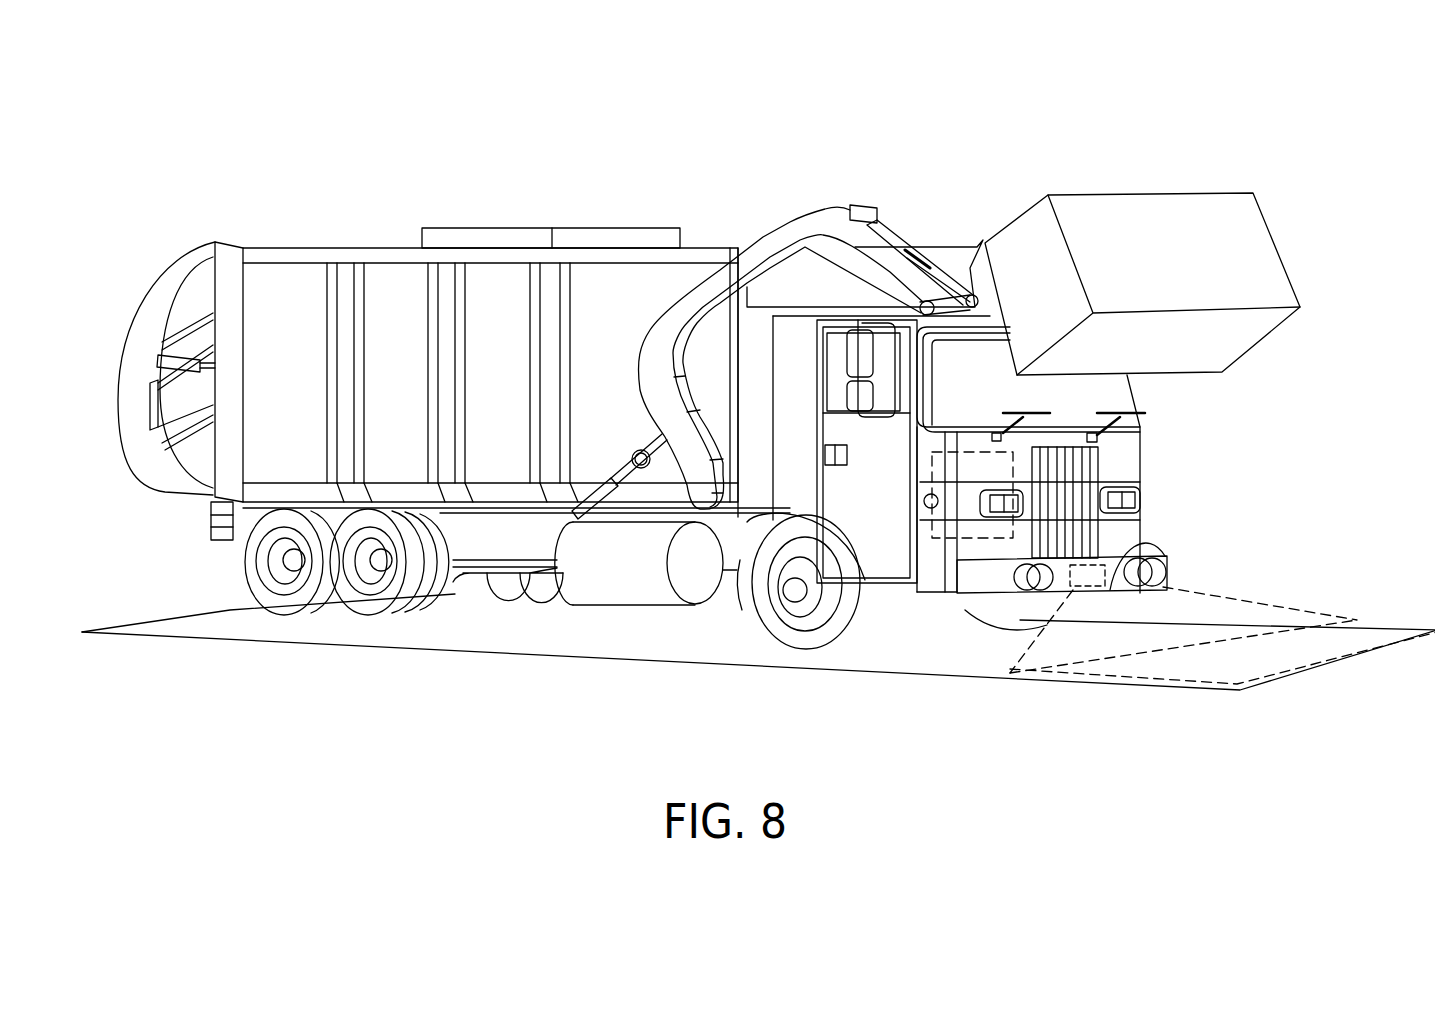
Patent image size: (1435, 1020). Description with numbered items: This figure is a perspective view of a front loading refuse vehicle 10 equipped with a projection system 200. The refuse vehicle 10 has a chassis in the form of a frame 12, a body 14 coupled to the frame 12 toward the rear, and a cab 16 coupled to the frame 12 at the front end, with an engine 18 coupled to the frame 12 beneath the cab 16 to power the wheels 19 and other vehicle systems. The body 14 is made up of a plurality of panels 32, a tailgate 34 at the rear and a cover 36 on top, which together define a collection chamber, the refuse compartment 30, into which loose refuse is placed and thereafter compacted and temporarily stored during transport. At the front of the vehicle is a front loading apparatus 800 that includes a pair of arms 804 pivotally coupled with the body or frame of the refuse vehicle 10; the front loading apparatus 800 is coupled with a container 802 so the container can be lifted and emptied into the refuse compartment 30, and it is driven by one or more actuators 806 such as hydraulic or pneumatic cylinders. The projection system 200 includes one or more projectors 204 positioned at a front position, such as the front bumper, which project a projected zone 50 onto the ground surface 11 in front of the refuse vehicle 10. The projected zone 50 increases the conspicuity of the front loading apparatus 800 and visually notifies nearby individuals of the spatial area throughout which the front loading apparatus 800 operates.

The refuse vehicle 10 is at (356, 116).
The ground surface 11 is at (174, 630).
The frame 12 is at (537, 550).
The body 14 is at (386, 257).
The cab 16 is at (933, 563).
The engine 18 is at (980, 545).
The wheels 19 is at (833, 633).
The refuse compartment 30 is at (712, 203).
The panels 32 is at (293, 283).
The tailgate 34 is at (172, 295).
The cover 36 is at (347, 248).
The projected zone 50 is at (1355, 632).
The projection system 200 is at (1198, 499).
The projectors 204 is at (1107, 573).
The front loading apparatus 800 is at (874, 160).
The container 802 is at (1157, 210).
The arms 804 is at (797, 222).
The actuators 806 is at (889, 226).